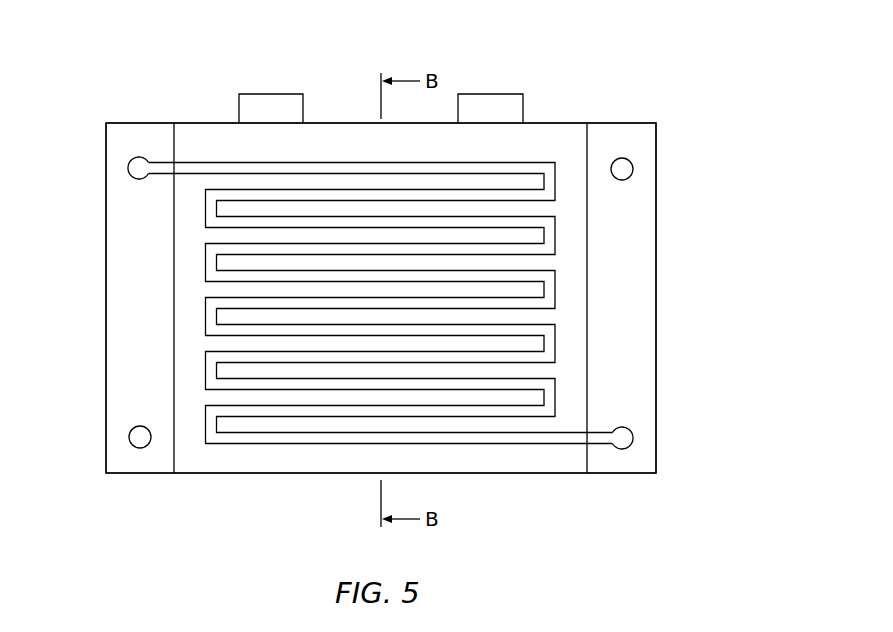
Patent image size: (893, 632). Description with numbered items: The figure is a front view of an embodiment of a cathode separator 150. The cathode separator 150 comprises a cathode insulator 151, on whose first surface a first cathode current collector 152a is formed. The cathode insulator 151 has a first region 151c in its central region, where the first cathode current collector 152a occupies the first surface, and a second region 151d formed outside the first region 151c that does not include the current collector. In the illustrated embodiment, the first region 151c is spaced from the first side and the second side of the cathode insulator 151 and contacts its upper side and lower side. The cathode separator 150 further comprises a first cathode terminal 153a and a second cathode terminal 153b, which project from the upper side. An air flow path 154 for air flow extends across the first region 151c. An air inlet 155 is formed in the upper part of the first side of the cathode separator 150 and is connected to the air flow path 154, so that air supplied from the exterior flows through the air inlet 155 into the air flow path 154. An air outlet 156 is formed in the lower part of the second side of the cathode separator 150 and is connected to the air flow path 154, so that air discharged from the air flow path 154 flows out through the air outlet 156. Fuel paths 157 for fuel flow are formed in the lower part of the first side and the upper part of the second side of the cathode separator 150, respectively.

The cathode separator 150 is at (684, 104).
The cathode insulator 151 is at (116, 377).
The first region 151c is at (587, 318).
The second region 151d is at (116, 203).
The first cathode current collector 152a is at (183, 286).
The first cathode terminal 153a is at (271, 100).
The second cathode terminal 153b is at (491, 100).
The air flow path 154 is at (334, 161).
The air inlet 155 is at (136, 157).
The air outlet 156 is at (622, 449).
The fuel paths 157 is at (633, 169).